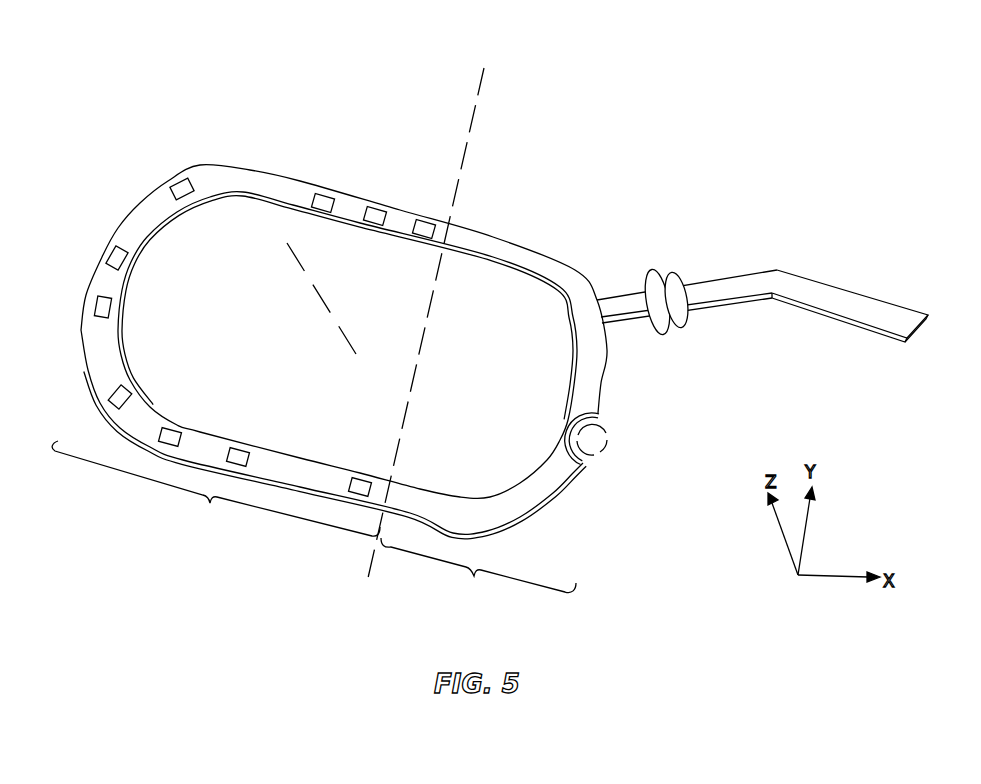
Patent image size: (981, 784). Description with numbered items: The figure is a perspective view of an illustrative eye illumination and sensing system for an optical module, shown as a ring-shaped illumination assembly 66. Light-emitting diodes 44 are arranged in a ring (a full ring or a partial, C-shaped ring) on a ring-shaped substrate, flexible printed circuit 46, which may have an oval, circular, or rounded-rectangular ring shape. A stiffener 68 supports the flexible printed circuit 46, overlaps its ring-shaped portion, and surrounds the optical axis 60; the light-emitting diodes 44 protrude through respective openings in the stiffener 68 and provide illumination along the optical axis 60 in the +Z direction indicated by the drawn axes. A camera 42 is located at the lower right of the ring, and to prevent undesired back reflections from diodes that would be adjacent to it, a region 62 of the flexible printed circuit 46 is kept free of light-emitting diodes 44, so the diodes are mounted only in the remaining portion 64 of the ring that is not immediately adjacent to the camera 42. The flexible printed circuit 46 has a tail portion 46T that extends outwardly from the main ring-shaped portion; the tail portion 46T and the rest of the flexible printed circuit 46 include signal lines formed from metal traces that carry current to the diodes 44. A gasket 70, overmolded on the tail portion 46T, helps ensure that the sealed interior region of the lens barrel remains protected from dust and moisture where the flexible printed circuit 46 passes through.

The frame ring 66 is at (145, 142).
The light-emitting diodes 44 is at (108, 256).
The optical axis 60 is at (328, 300).
The flexible printed circuit 46 is at (611, 292).
The gasket 70 is at (681, 264).
The tail portion 46T is at (857, 306).
The stiffener 68 is at (594, 377).
The camera 42 is at (612, 452).
The first frame portion 64 is at (216, 488).
The region 62 is at (478, 569).